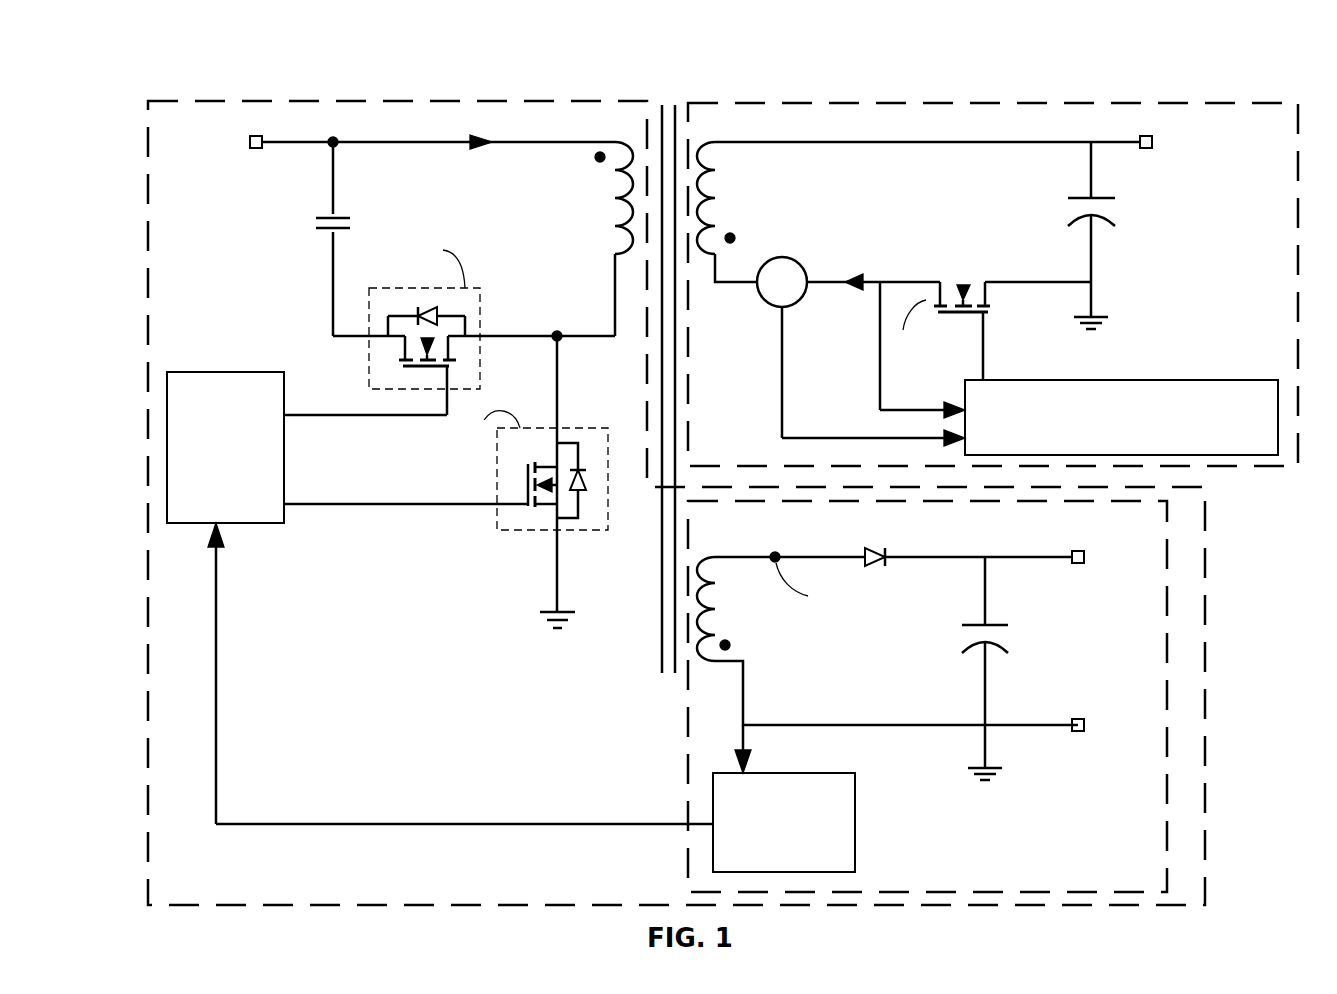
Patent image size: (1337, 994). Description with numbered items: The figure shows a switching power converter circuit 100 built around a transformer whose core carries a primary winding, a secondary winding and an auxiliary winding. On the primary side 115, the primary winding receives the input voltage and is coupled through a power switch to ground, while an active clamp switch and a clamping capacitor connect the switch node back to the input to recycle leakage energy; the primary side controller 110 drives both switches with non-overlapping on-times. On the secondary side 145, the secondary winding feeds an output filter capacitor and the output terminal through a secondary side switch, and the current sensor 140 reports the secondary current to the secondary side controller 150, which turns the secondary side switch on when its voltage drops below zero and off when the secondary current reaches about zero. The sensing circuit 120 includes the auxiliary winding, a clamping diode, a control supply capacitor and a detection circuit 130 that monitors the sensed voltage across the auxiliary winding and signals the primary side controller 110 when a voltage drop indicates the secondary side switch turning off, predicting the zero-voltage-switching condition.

The switching power converter circuit 100 is at (153, 51).
The primary side controller 110 is at (206, 500).
The primary side 115 is at (554, 101).
The sensing circuit 120 is at (1167, 522).
The detection circuit 130 is at (765, 863).
The current sensor 140 is at (760, 300).
The secondary side 145 is at (968, 103).
The secondary side controller 150 is at (1102, 440).